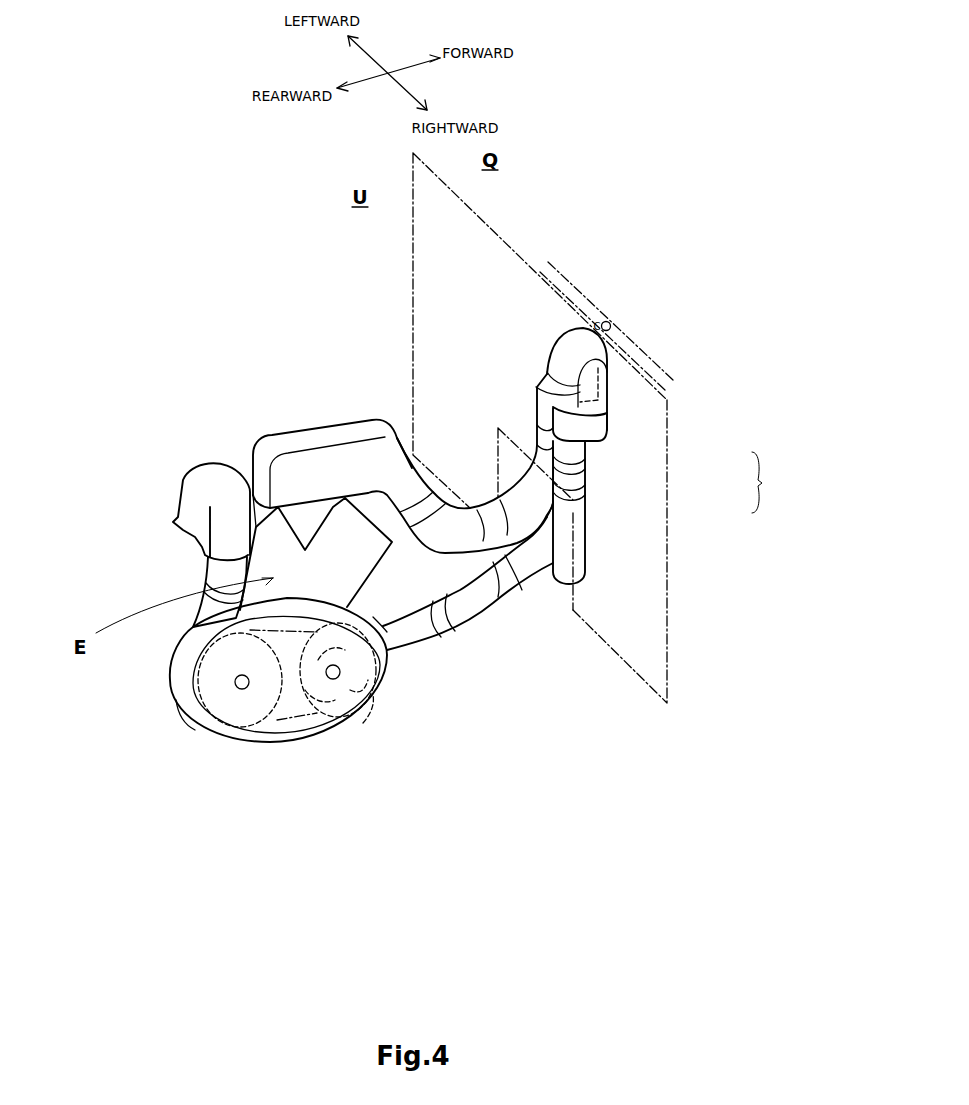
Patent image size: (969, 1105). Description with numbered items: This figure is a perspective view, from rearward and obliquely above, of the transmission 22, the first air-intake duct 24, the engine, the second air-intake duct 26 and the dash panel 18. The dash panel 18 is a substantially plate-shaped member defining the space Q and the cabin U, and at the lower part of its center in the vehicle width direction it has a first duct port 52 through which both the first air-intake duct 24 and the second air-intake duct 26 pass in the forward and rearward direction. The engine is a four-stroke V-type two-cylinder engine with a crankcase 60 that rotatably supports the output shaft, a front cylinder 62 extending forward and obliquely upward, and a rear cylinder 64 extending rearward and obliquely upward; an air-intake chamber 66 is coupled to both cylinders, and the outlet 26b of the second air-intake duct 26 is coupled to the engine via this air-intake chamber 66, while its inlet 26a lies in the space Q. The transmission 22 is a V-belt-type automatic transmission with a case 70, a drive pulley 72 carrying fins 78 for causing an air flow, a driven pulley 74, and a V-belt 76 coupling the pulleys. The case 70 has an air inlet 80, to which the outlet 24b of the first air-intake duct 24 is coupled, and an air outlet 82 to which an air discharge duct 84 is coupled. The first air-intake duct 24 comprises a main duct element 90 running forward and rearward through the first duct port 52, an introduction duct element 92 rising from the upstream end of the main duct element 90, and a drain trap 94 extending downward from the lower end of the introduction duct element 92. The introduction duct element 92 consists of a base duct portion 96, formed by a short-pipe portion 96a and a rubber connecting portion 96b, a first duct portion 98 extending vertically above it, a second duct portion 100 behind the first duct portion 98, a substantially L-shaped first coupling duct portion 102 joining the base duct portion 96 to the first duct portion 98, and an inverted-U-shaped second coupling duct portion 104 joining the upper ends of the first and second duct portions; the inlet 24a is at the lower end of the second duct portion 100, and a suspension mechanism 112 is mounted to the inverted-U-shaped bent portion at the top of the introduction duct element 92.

The dash panel 18 is at (657, 396).
The transmission 22 is at (251, 742).
The first air-intake duct 24 is at (477, 618).
The inlet 24a is at (550, 393).
The outlet 24b is at (387, 632).
The second air-intake duct 26 is at (444, 553).
The inlet 26a is at (593, 377).
The outlet 26b is at (437, 510).
The first duct port 52 is at (504, 430).
The crankcase 60 is at (297, 583).
The front cylinder 62 is at (353, 537).
The rear cylinder 64 is at (270, 537).
The air-intake chamber 66 is at (302, 468).
The case 70 is at (315, 730).
The drive pulley 72 is at (286, 727).
The driven pulley 74 is at (213, 740).
The V-belt 76 is at (277, 720).
The fins 78 is at (363, 723).
The air inlet 80 is at (362, 694).
The air outlet 82 is at (190, 713).
The air discharge duct 84 is at (180, 480).
The main duct element 90 is at (503, 602).
The introduction duct element 92 is at (590, 451).
The drain trap 94 is at (588, 552).
The base duct portion 96 is at (772, 482).
The short-pipe portion 96a is at (580, 459).
The connecting portion 96b is at (580, 480).
The first duct portion 98 is at (603, 390).
The second duct portion 100 is at (548, 368).
The first coupling duct portion 102 is at (600, 430).
The second coupling duct portion 104 is at (577, 338).
The suspension mechanism 112 is at (617, 318).